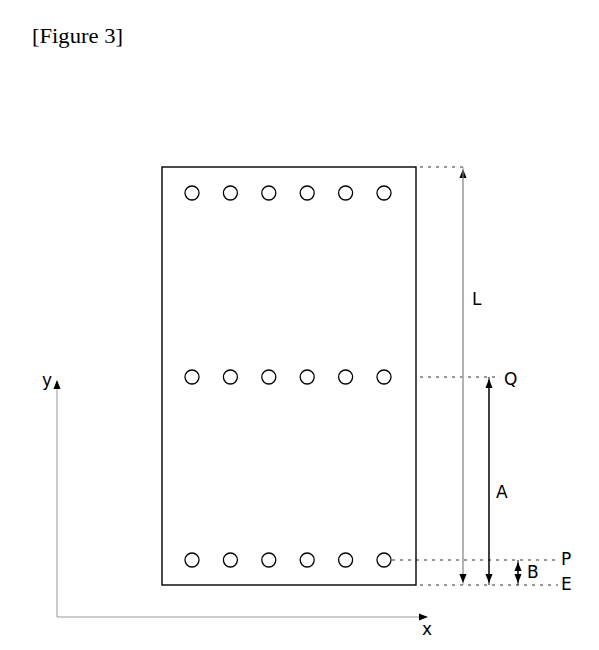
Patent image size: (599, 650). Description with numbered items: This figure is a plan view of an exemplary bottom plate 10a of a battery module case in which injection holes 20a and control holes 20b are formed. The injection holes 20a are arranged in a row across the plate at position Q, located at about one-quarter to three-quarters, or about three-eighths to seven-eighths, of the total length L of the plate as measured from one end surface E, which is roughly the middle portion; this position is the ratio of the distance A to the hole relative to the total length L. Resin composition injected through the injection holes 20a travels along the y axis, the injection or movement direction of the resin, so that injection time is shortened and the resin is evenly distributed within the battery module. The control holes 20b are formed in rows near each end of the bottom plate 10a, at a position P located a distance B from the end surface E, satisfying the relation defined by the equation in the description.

The plate (perforated member) 10a is at (396, 130).
The injection holes 20a is at (194, 375).
The control hole 20b is at (194, 191).